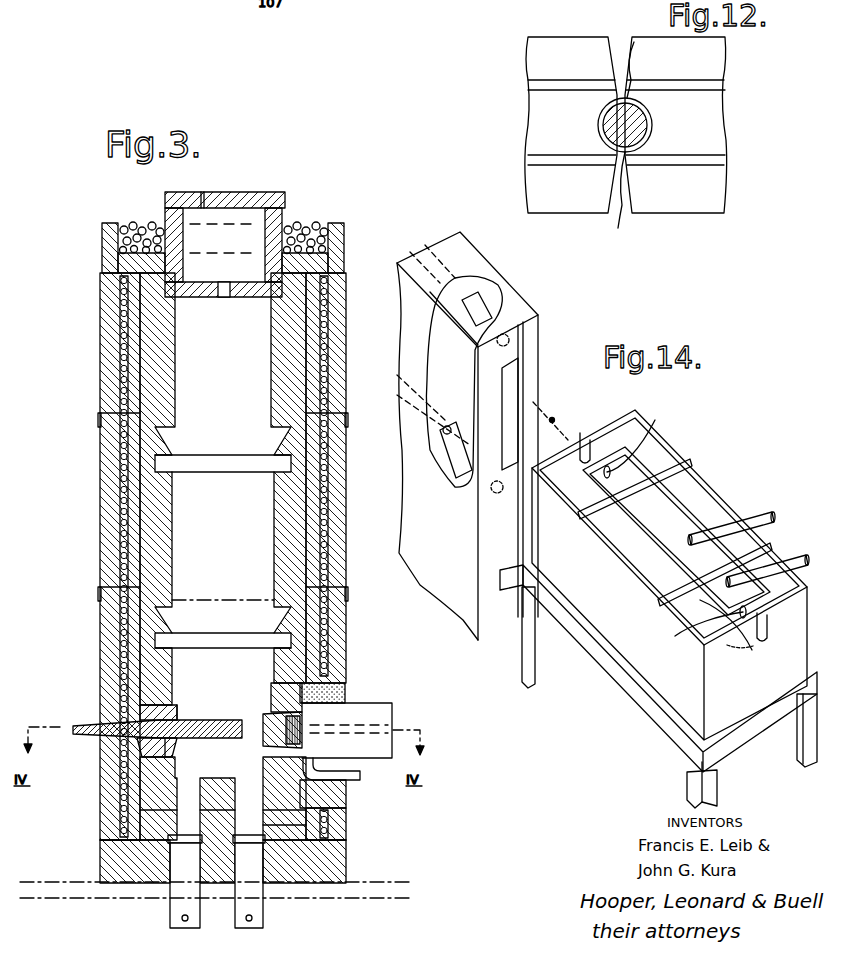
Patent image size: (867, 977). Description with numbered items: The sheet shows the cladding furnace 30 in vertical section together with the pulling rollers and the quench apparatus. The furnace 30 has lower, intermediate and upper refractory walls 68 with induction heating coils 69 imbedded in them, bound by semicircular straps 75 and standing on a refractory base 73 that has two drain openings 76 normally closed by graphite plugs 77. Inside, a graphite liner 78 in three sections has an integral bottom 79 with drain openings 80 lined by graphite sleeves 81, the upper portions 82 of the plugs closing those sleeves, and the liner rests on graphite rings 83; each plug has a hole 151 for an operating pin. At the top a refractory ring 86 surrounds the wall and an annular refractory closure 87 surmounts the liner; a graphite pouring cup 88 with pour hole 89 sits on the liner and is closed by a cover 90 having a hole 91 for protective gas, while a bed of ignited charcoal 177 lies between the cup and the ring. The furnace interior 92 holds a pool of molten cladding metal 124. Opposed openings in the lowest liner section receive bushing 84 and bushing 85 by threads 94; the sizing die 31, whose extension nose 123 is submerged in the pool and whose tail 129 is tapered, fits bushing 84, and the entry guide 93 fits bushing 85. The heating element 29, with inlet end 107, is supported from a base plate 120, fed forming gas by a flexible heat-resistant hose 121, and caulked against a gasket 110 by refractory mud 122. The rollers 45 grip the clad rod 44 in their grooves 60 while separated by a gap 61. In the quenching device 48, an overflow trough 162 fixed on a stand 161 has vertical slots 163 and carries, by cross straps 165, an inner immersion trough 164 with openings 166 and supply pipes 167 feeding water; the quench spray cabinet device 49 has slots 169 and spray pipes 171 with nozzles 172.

In FIG. 3, the heating element 29 is at (370, 707).
In FIG. 3, the cladding furnace 30 is at (100, 499).
In FIG. 3, the sizing die 31 is at (182, 707).
In FIG. 12, the clad rod 44 is at (618, 222).
In FIG. 12, the rollers 45 is at (588, 213).
In FIG. 14, the quenching device 48 is at (627, 655).
In FIG. 14, the quench spray cabinet device 49 is at (530, 305).
In FIG. 12, the grooves 60 is at (541, 122).
In FIG. 12, the gap 61 is at (633, 44).
In FIG. 3, the walls 68 is at (103, 647).
In FIG. 3, the induction heating coils 69 is at (122, 550).
In FIG. 3, the refractory base 73 is at (125, 862).
In FIG. 3, the semicircular straps 75 is at (100, 414).
In FIG. 3, the drain openings 76 is at (178, 830).
In FIG. 3, the graphite plugs 77 is at (185, 870).
In FIG. 3, the graphite liner 78 is at (165, 385).
In FIG. 3, the bottom 79 is at (222, 812).
In FIG. 3, the drain openings 80 is at (268, 778).
In FIG. 3, the graphite sleeves 81 is at (200, 785).
In FIG. 3, the upper portions 82 is at (180, 820).
In FIG. 3, the graphite rings 83 is at (270, 825).
In FIG. 3, the bushing 84 is at (155, 713).
In FIG. 3, the bushing 85 is at (268, 690).
In FIG. 3, the refractory ring 86 is at (102, 249).
In FIG. 3, the annular refractory closure 87 is at (137, 262).
In FIG. 3, the graphite pouring cup 88 is at (165, 218).
In FIG. 3, the pour hole 89 is at (224, 298).
In FIG. 3, the cover 90 is at (262, 203).
In FIG. 3, the hole 91 is at (203, 192).
In FIG. 3, the furnace interior 92 is at (231, 545).
In FIG. 3, the entry guide 93 is at (268, 722).
In FIG. 3, the threads 94 is at (145, 758).
In FIG. 3, the inlet end 107 is at (348, 770).
In FIG. 3, the gasket 110 is at (302, 740).
In FIG. 3, the base plate 120 is at (64, 882).
In FIG. 3, the flexible heat-resistant hose 121 is at (332, 786).
In FIG. 3, the refractory mud 122 is at (332, 693).
In FIG. 3, the extension nose 123 is at (206, 722).
In FIG. 3, the pool of molten cladding metal 124 is at (232, 596).
In FIG. 3, the tail 129 is at (90, 725).
In FIG. 3, the hole 151 is at (253, 918).
In FIG. 14, the stand 161 is at (740, 742).
In FIG. 14, the overflow trough 162 is at (688, 498).
In FIG. 14, the vertical slots 163 is at (598, 412).
In FIG. 14, the inner immersion trough 164 is at (653, 507).
In FIG. 14, the cross straps 165 is at (657, 467).
In FIG. 14, the openings 166 is at (680, 637).
In FIG. 14, the supply pipes 167 is at (808, 560).
In FIG. 14, the slots 169 is at (512, 385).
In FIG. 14, the spray pipes 171 is at (470, 284).
In FIG. 14, the nozzles 172 is at (452, 425).
In FIG. 3, the bed of ignited charcoal 177 is at (312, 222).